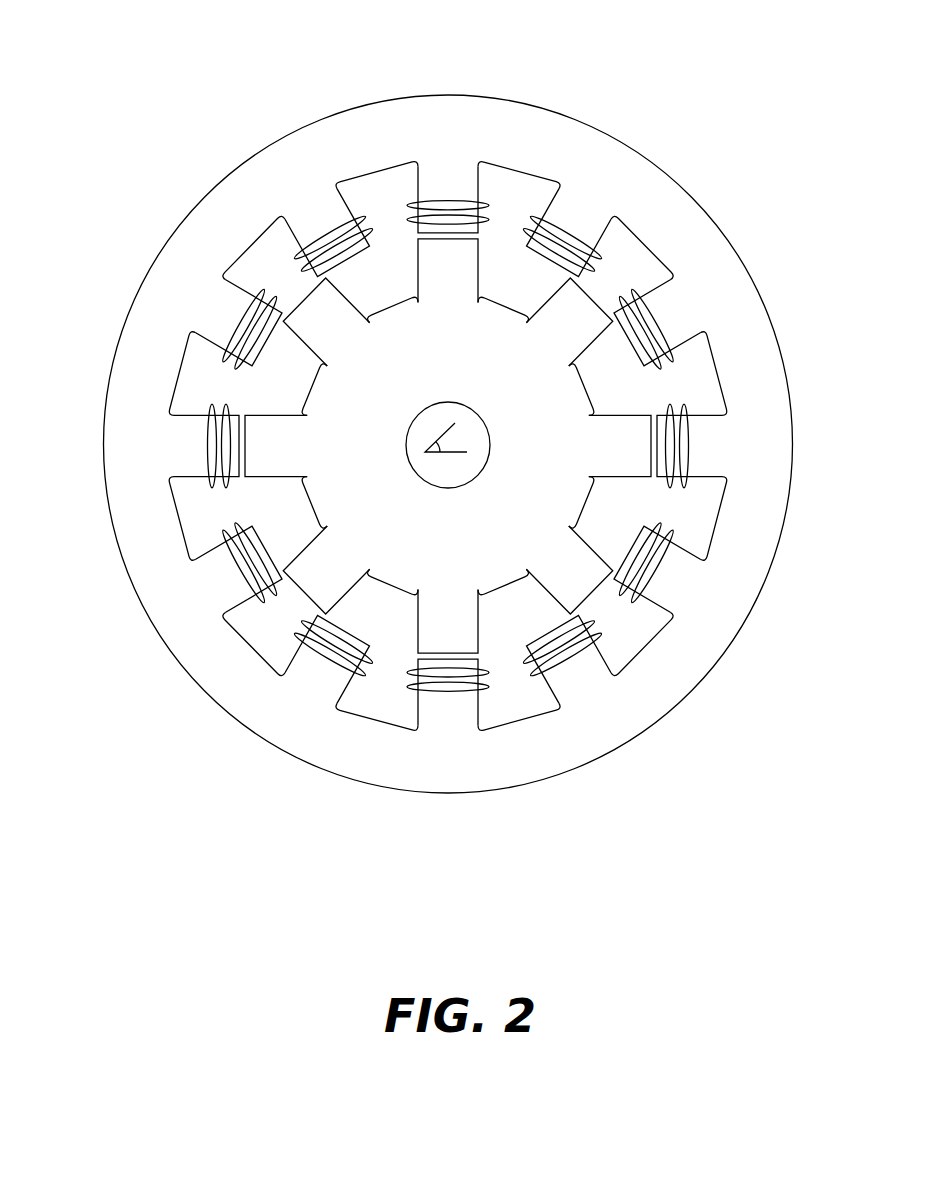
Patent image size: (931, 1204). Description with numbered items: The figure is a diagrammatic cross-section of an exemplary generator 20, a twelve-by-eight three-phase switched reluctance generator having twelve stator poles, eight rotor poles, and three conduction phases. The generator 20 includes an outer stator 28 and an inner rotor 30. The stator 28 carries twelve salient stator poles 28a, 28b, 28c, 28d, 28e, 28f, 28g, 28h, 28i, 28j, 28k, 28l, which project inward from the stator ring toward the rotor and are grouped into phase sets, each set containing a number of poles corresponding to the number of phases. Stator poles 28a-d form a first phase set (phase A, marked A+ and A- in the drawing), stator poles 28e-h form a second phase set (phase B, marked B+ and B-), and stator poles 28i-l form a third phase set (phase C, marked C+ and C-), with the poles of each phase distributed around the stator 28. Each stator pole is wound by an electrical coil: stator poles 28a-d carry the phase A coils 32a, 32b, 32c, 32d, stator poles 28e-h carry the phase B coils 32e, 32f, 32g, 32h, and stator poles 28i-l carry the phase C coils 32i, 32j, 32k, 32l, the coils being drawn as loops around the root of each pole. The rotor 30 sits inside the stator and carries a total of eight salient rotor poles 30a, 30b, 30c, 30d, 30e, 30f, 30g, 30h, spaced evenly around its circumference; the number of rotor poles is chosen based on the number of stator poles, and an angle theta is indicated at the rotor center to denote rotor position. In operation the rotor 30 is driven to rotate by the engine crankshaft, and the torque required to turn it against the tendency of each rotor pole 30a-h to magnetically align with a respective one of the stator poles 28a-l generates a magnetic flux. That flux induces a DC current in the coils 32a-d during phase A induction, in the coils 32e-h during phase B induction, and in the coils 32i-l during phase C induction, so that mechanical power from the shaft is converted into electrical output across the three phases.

The generator 20 is at (439, 452).
The stator 28 is at (530, 767).
The stator pole 28a is at (705, 466).
The stator pole 28b is at (182, 440).
The stator pole 28c is at (467, 190).
The stator pole 28d is at (433, 700).
The stator pole 28e is at (555, 220).
The stator pole 28f is at (297, 628).
The stator pole 28g is at (660, 593).
The stator pole 28h is at (240, 310).
The stator pole 28i is at (558, 680).
The stator pole 28j is at (337, 217).
The stator pole 28k is at (697, 330).
The stator pole 28l is at (217, 558).
The electrical coil 32a is at (684, 488).
The electrical coil 32b is at (215, 404).
The electrical coil 32c is at (483, 207).
The electrical coil 32d is at (410, 690).
The electrical coil 32e is at (600, 266).
The electrical coil 32f is at (302, 660).
The electrical coil 32g is at (630, 596).
The electrical coil 32h is at (262, 290).
The electrical coil 32i is at (527, 664).
The electrical coil 32j is at (369, 223).
The electrical coil 32k is at (668, 366).
The electrical coil 32l is at (225, 524).
The rotor 30 is at (434, 362).
The rotor pole 30a is at (601, 458).
The rotor pole 30b is at (550, 333).
The rotor pole 30c is at (428, 281).
The rotor pole 30d is at (306, 333).
The rotor pole 30e is at (255, 458).
The rotor pole 30f is at (308, 583).
The rotor pole 30g is at (428, 634).
The rotor pole 30h is at (550, 583).